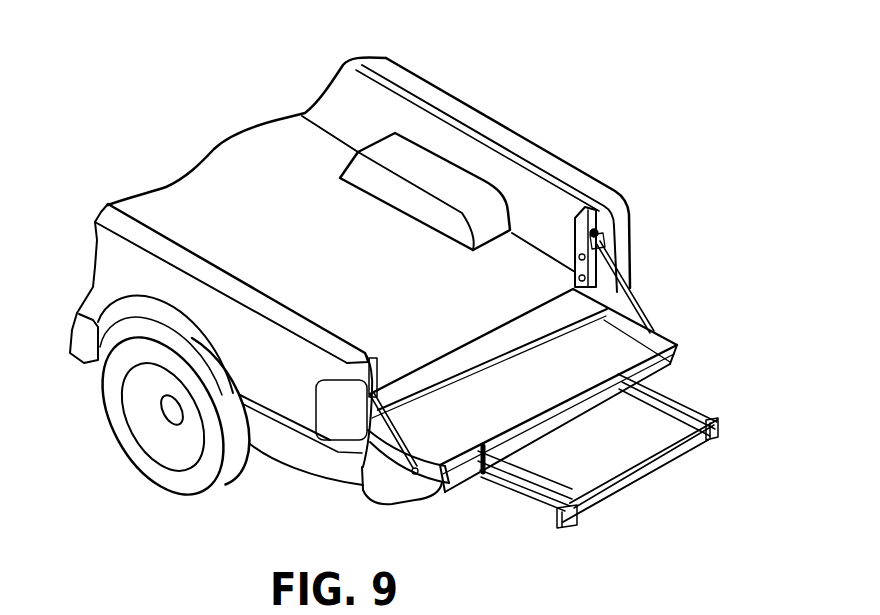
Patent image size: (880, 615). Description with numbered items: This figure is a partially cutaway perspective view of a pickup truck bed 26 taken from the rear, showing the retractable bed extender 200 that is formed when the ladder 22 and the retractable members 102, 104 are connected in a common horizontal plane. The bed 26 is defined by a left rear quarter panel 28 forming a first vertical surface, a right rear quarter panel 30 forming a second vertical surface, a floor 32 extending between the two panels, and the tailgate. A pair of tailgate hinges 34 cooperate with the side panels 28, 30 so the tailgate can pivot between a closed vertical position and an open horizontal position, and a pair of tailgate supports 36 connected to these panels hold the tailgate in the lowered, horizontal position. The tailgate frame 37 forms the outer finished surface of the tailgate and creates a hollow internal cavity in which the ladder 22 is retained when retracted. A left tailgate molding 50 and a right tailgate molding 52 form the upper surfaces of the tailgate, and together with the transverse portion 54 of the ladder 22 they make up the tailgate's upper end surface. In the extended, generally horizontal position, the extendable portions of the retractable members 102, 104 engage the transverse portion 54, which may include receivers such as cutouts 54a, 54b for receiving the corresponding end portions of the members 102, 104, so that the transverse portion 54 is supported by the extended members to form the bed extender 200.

The retractable ladder 22 is at (660, 520).
The bed 26 is at (280, 206).
The left rear quarter panel 28 is at (95, 268).
The right rear quarter panel 30 is at (389, 70).
The floor 32 is at (250, 128).
The tailgate hinges 34 is at (613, 268).
The tailgate supports 36 is at (640, 320).
The tailgate frame 37 is at (414, 497).
The left tailgate molding 50 is at (455, 483).
The right tailgate molding 52 is at (668, 358).
The transverse portion 54 is at (652, 472).
The cutout 54a is at (573, 517).
The cutout 54b is at (713, 437).
The retractable member 102 is at (537, 500).
The retractable member 104 is at (708, 417).
The retractable bed extender 200 is at (720, 355).